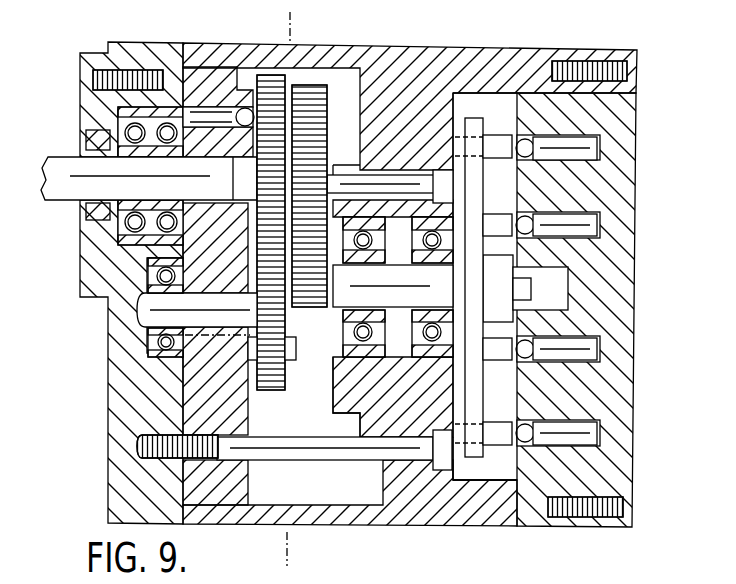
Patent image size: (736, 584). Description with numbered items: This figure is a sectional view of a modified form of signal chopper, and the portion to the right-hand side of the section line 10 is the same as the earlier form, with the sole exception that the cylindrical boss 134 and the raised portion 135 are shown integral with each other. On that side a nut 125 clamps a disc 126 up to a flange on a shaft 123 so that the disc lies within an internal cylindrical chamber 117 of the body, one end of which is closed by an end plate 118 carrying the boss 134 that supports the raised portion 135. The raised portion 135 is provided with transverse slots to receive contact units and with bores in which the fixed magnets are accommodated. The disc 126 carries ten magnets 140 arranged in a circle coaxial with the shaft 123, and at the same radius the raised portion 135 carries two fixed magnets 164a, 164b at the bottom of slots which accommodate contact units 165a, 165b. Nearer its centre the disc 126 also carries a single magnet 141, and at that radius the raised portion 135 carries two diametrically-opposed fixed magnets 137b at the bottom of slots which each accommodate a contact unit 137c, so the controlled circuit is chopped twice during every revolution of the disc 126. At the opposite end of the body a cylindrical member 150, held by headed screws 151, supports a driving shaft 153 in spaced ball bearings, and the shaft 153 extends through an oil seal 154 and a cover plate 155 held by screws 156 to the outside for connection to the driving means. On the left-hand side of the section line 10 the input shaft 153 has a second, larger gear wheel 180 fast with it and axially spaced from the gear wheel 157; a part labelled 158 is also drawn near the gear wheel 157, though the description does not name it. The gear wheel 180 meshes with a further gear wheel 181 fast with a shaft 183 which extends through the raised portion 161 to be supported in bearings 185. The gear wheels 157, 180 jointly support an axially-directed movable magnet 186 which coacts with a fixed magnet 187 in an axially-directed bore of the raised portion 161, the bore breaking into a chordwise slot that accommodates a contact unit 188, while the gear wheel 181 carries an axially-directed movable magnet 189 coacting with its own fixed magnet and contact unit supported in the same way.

The section line 10 is at (296, 30).
The internal cylindrical chamber 117 is at (492, 108).
The end plate 118 is at (625, 281).
The shaft 123 is at (402, 508).
The nut 125 is at (510, 290).
The disc 126 is at (474, 116).
The cylindrical boss 134 is at (578, 471).
The raised portion 135 is at (530, 458).
The fixed magnet 137b is at (592, 224).
The contact unit 137c is at (528, 218).
The magnet 140 is at (493, 432).
The single magnet 141 is at (505, 240).
The cylindrical member 150 is at (212, 46).
The headed screw 151 is at (316, 447).
The driving shaft 153 is at (57, 173).
The oil seal 154 is at (85, 210).
The cover plate 155 is at (90, 248).
The screw 156 is at (127, 75).
The gear wheel 157 is at (288, 112).
The hub 158 is at (307, 310).
The raised portion 161 is at (242, 505).
The fixed magnet 164a is at (592, 146).
The fixed magnet 164b is at (592, 432).
The contact unit 165a is at (528, 142).
The contact unit 165b is at (530, 422).
The gear wheel 180 is at (190, 252).
The gear wheel 181 is at (240, 378).
The shaft 183 is at (150, 307).
The bearing 185 is at (143, 342).
The movable magnet 186 is at (328, 118).
The fixed magnet 187 is at (195, 108).
The contact unit 188 is at (247, 100).
The movable magnet 189 is at (314, 397).